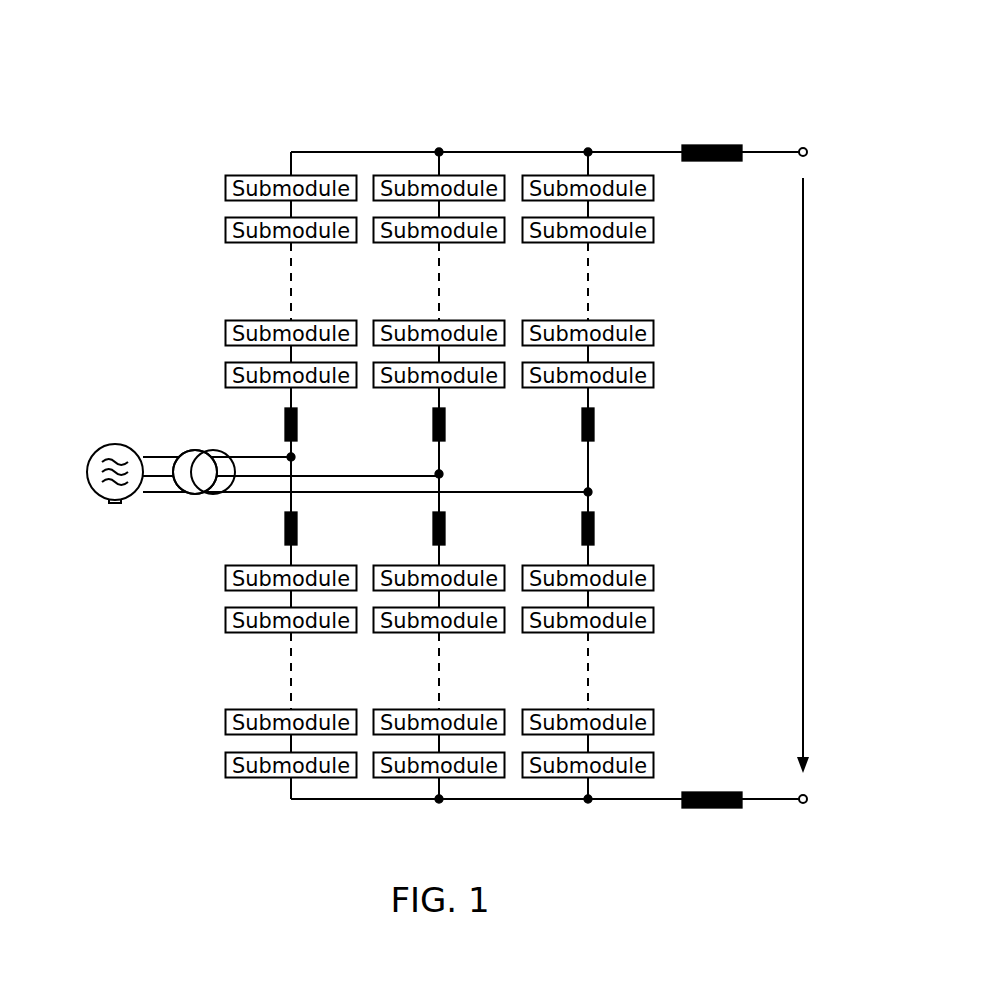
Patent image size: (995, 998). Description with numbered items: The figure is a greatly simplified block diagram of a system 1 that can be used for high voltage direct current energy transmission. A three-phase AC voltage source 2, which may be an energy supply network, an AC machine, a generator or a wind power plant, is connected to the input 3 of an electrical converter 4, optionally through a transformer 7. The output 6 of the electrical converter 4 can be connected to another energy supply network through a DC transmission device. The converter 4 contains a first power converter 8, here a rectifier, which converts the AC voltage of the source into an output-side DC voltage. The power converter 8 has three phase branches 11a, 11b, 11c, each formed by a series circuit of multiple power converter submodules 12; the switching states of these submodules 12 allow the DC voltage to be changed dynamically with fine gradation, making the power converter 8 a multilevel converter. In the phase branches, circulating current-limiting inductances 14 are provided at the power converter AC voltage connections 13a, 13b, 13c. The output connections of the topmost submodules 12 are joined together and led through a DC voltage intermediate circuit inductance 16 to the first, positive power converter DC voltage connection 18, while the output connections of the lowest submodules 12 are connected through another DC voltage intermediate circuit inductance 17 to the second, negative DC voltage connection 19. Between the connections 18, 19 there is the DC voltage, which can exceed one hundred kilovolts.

The system 1 is at (177, 45).
The AC voltage source 2 is at (92, 443).
The input 3 is at (250, 443).
The electrical converter 4 is at (215, 118).
The output 6 is at (827, 330).
The transformer 7 is at (194, 496).
The first power converter 8 is at (658, 167).
The phase branch 11a is at (283, 163).
The phase branch 11b is at (368, 168).
The phase branch 11c is at (514, 166).
The power converter submodule 12 is at (224, 227).
The power converter AC voltage connection 13a is at (288, 455).
The power converter AC voltage connection 13b is at (442, 474).
The power converter AC voltage connection 13c is at (592, 491).
The circulating current-limiting inductance 14 is at (297, 427).
The DC voltage intermediate circuit inductance 16 is at (714, 147).
The DC voltage intermediate circuit inductance 17 is at (716, 807).
The first power converter DC voltage connection 18 is at (811, 153).
The second power converter DC voltage connection 19 is at (812, 801).